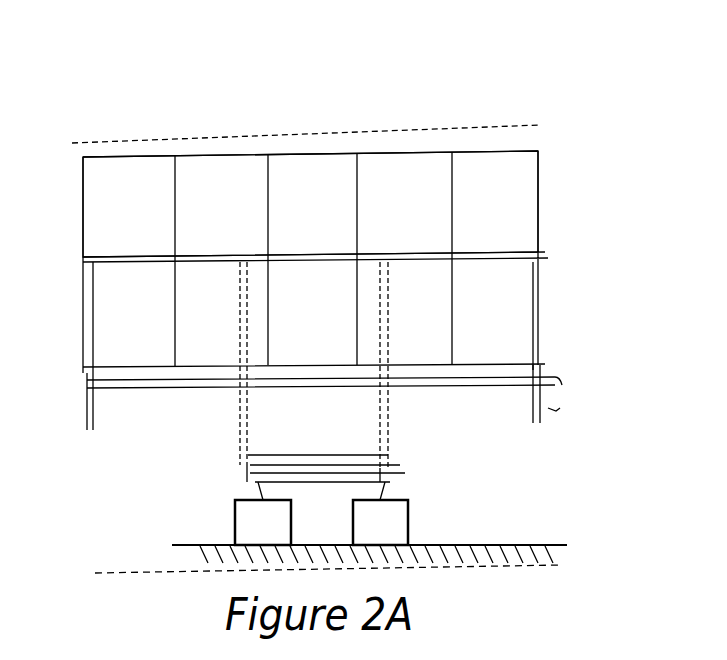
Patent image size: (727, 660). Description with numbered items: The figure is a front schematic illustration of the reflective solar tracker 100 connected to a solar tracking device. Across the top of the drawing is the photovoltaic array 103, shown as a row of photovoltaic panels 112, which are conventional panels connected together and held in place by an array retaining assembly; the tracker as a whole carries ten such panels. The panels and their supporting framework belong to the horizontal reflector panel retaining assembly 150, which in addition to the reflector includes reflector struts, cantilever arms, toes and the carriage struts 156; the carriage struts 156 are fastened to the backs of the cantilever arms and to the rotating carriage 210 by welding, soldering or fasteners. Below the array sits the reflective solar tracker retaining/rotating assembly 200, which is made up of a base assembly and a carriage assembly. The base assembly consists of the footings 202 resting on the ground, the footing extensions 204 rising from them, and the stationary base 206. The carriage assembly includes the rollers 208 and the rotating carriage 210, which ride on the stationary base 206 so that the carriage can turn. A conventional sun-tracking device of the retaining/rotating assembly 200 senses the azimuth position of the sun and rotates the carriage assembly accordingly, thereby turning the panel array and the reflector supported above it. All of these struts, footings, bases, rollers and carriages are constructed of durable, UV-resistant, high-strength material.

The reflective solar tracker 100 is at (97, 124).
The photovoltaic array 103 is at (377, 124).
The photovoltaic panel 112 is at (112, 229).
The horizontal reflector panel retaining assembly 150 is at (523, 78).
The carriage strut 156 is at (385, 432).
The reflective solar tracker retaining/rotating assembly 200 is at (490, 500).
The footing 202 is at (240, 520).
The footing extension 204 is at (258, 497).
The stationary base 206 is at (250, 480).
The roller 208 is at (367, 470).
The rotating carriage 210 is at (387, 452).